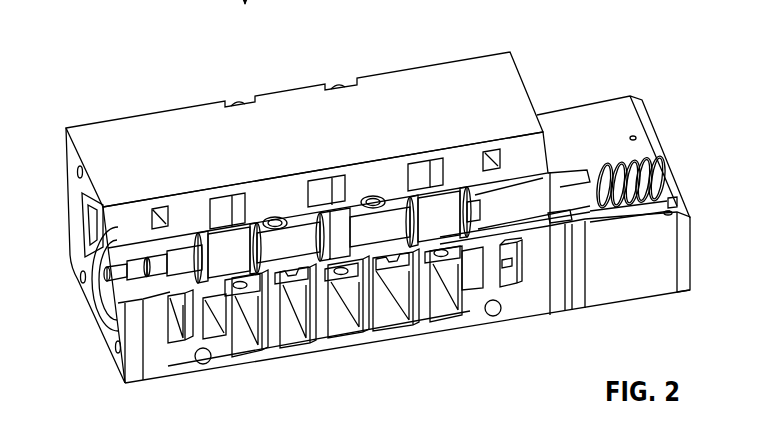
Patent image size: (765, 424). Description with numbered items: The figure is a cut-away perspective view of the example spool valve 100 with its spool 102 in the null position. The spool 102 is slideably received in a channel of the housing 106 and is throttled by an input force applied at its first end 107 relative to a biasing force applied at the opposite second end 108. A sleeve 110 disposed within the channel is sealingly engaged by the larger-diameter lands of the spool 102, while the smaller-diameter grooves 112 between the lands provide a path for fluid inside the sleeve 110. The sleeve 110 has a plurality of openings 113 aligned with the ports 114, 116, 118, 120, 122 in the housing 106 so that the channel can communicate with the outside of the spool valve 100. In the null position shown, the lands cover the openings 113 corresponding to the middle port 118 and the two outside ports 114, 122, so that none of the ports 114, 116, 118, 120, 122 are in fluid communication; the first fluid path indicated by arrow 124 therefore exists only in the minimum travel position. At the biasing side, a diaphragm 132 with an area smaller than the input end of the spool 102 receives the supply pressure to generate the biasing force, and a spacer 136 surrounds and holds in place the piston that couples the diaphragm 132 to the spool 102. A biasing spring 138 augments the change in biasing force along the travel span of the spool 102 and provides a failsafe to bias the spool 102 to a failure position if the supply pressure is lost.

The spool valve 100 is at (140, 93).
The spool 102 is at (216, 265).
The housing 106 is at (190, 0).
The first end 107 is at (186, 252).
The second end 108 is at (468, 208).
The sleeve 110 is at (245, 268).
The grooves 112 is at (389, 201).
The openings 113 is at (293, 266).
The port 114 is at (249, 347).
The port 116 is at (297, 340).
The port 118 is at (348, 332).
The port 120 is at (396, 323).
The port 122 is at (447, 313).
The arrow 124 is at (318, 0).
The diaphragm 132 is at (556, 213).
The spacer 136 is at (512, 252).
The biasing spring 138 is at (660, 157).